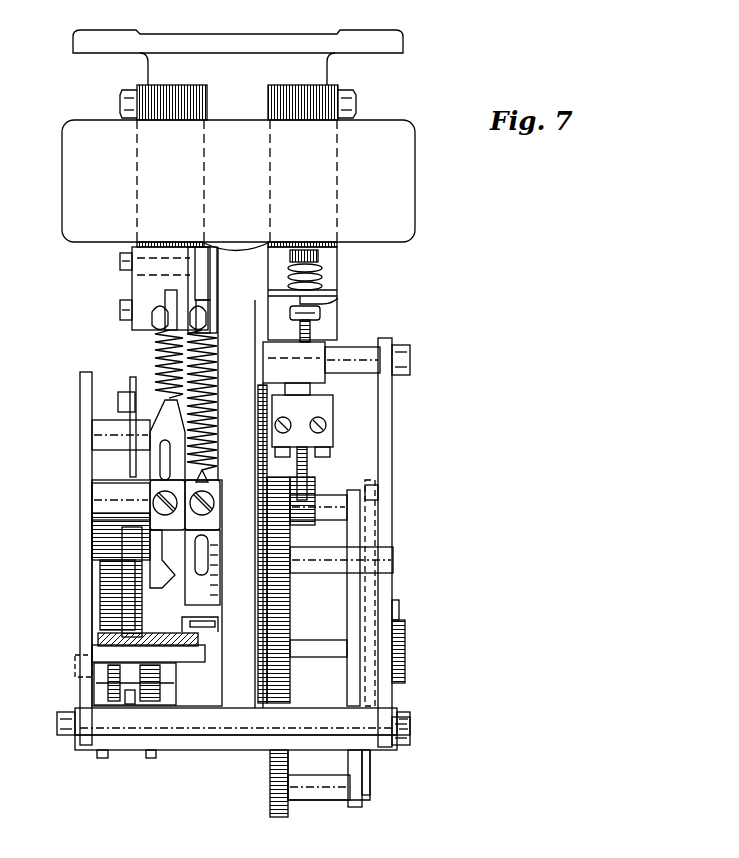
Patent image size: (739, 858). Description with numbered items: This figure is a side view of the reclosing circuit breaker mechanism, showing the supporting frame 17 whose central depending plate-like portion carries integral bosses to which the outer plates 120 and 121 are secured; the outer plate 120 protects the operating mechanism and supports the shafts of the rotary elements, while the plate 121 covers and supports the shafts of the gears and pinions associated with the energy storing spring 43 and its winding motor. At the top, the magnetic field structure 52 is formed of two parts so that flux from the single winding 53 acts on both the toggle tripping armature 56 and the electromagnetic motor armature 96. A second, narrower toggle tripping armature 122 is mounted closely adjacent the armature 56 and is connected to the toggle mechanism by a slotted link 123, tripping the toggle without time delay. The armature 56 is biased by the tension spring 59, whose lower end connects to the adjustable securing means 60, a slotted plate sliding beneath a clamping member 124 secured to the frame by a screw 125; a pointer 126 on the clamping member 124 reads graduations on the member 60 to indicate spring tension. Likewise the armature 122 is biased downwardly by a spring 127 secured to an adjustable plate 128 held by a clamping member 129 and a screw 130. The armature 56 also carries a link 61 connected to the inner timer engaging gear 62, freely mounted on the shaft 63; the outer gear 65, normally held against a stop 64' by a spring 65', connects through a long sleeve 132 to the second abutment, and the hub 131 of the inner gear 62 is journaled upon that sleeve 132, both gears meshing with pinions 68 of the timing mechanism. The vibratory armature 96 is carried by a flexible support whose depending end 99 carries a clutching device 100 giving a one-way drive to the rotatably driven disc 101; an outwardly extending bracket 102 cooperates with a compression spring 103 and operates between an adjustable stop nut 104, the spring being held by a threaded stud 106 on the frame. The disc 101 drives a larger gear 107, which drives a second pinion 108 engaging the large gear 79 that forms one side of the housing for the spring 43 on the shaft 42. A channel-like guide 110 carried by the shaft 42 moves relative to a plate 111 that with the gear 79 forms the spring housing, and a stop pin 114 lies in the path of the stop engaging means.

The supporting frame 17 is at (125, 43).
The shaft 42 is at (405, 646).
The energy storing clock spring 43 is at (303, 803).
The magnetic field structure 52 is at (168, 110).
The winding 53 is at (250, 187).
The pivotally mounted armature 56 is at (132, 288).
The tension spring 59 is at (155, 360).
The adjustable securing means 60 is at (167, 385).
The link 61 is at (160, 462).
The gear 62 is at (151, 759).
The shaft 63 is at (75, 666).
The stop 64' is at (215, 615).
The gear 65 is at (95, 772).
The spring 65' is at (126, 734).
The pinions 68 is at (100, 560).
The gear 79 is at (270, 799).
The vibratory armature 96 is at (337, 263).
The depending end 99 is at (327, 404).
The clutching device 100 is at (333, 437).
The rotatably driven disc 101 is at (308, 475).
The outwardly extending bracket 102 is at (330, 303).
The compression spring 103 is at (322, 280).
The adjustable stop nut 104 is at (320, 311).
The threaded stud 106 is at (312, 331).
The gear 107 is at (272, 670).
The second pinion 108 is at (284, 580).
The channel-like guide 110 is at (372, 788).
The plate 111 is at (352, 765).
The stop pin 114 is at (372, 492).
The outer plate 120 is at (80, 402).
The outer plate 121 is at (392, 452).
The second toggle tripping armature 122 is at (213, 291).
The slotted link 123 is at (206, 324).
The clamping member 124 is at (92, 535).
The screw 125 is at (153, 503).
The pointer 126 is at (153, 585).
The spring 127 is at (215, 418).
The adjustable plate 128 is at (209, 480).
The clamping member 129 is at (210, 540).
The screw 130 is at (214, 497).
The hub 131 is at (165, 650).
The sleeve 132 is at (98, 641).